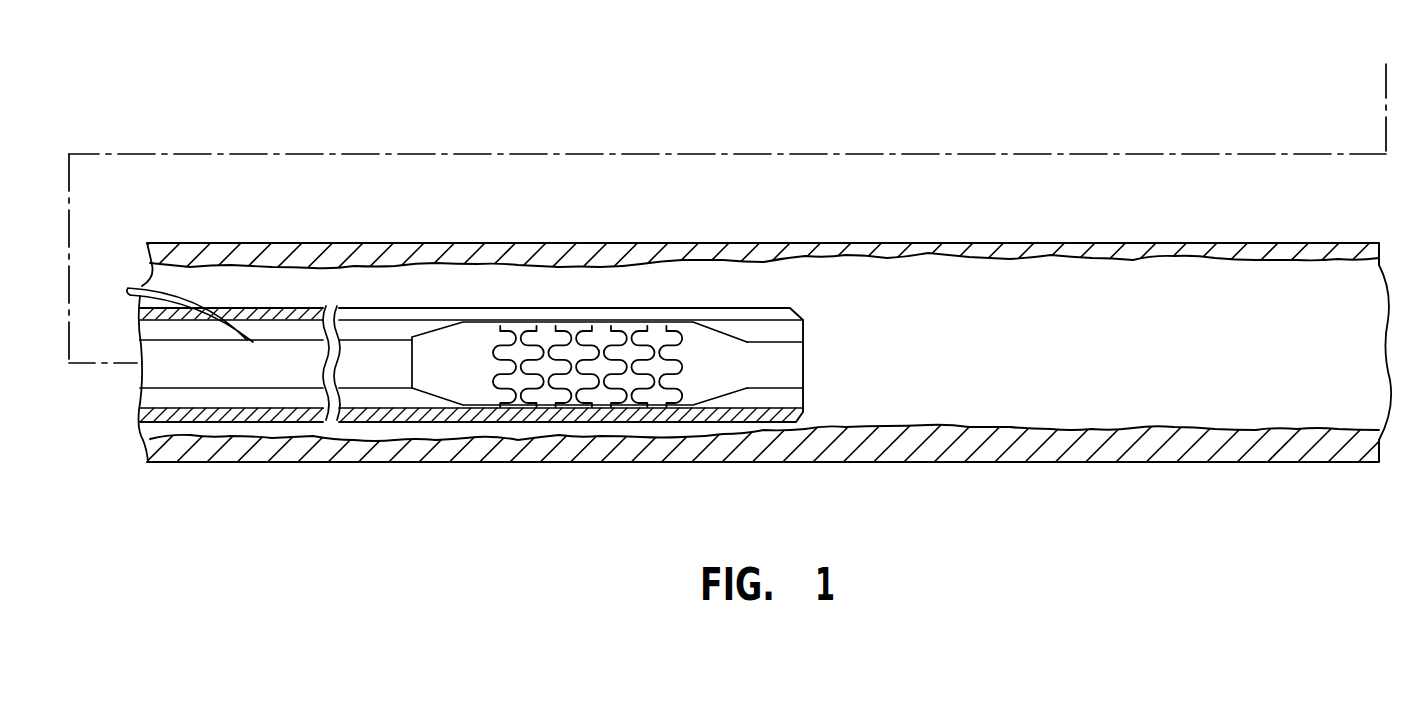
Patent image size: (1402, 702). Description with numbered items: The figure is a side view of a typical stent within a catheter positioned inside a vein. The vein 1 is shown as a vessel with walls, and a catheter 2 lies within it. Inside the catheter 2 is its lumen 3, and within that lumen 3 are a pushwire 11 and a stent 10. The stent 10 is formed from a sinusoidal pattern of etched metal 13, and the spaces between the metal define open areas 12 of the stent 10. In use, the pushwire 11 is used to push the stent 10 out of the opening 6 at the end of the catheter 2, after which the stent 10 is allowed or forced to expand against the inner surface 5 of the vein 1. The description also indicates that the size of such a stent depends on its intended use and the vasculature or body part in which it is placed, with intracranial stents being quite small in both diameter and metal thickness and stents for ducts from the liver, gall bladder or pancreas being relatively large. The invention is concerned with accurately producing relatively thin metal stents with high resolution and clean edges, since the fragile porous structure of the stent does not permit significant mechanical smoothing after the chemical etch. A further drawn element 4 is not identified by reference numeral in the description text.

The vein 1 is at (283, 458).
The catheter 2 is at (477, 420).
The lumen 3 is at (252, 397).
The balloon 4 is at (423, 383).
The inner surface 5 is at (956, 432).
The opening 6 is at (788, 398).
The stent 10 is at (476, 358).
The pushwire 11 is at (380, 352).
The open areas 12 is at (613, 333).
The etched metal 13 is at (538, 340).